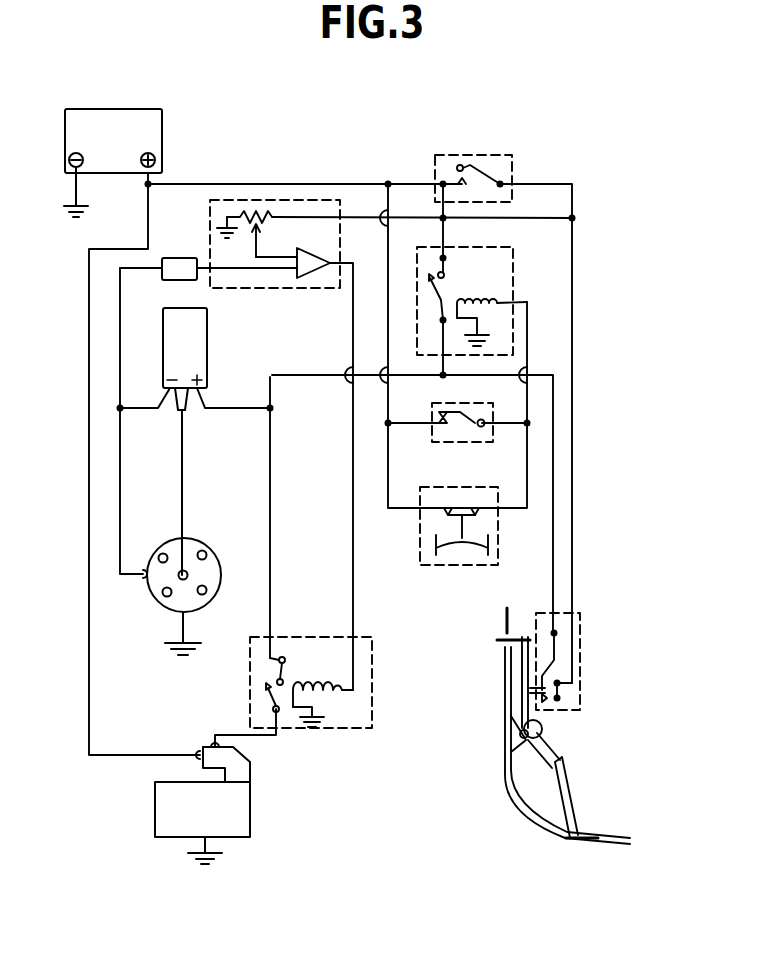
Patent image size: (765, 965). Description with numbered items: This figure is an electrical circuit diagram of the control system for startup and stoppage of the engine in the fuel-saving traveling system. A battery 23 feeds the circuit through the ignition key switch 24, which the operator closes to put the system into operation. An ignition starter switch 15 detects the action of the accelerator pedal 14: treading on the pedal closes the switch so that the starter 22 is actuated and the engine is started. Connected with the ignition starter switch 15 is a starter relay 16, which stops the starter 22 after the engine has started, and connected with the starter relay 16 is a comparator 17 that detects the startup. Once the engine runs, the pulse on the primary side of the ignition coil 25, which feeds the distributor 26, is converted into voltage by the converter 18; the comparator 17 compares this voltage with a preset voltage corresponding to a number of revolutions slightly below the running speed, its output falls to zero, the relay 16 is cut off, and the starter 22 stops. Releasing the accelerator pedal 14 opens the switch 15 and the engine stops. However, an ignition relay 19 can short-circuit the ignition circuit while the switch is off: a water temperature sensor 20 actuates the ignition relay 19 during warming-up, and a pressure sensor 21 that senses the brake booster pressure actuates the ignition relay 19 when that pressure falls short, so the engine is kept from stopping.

The accelerator pedal 14 is at (570, 790).
The ignition starter switch 15 is at (580, 668).
The starter relay 16 is at (375, 675).
The comparator 17 is at (340, 250).
The converter 18 is at (187, 258).
The ignition relay 19 is at (513, 275).
The water temperature sensor 20 is at (460, 442).
The pressure sensor 21 is at (450, 487).
The starter 22 is at (242, 817).
The battery 23 is at (158, 137).
The ignition key switch 24 is at (513, 165).
The ignition coil 25 is at (200, 347).
The distributor 26 is at (207, 552).